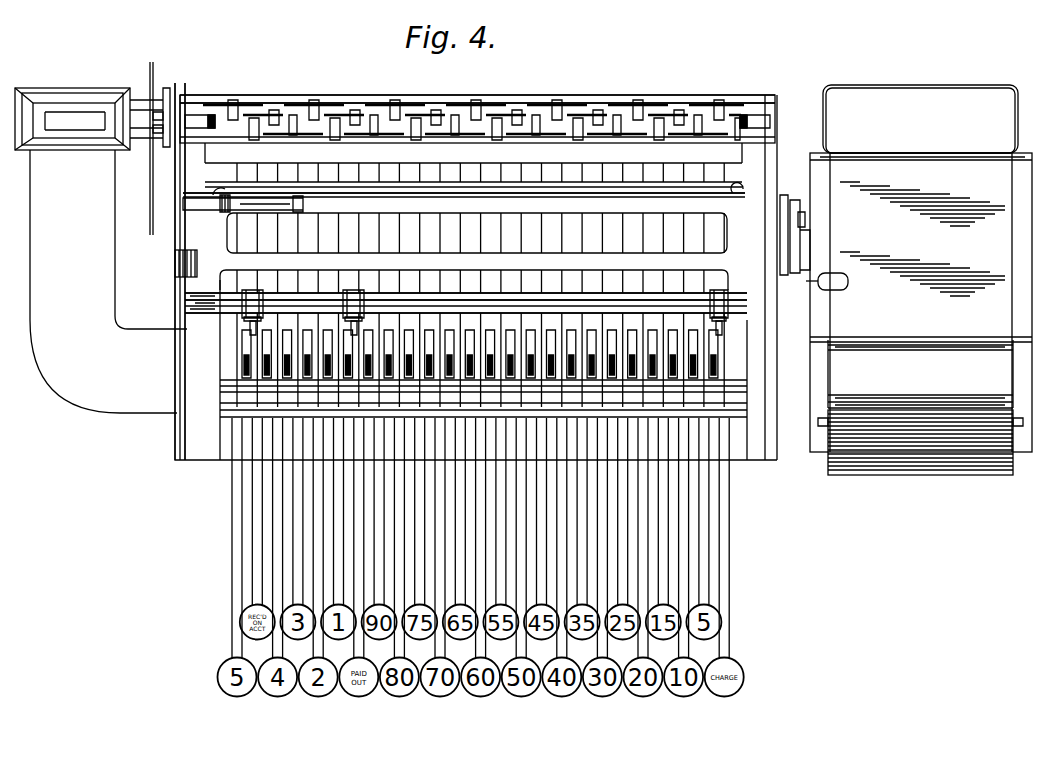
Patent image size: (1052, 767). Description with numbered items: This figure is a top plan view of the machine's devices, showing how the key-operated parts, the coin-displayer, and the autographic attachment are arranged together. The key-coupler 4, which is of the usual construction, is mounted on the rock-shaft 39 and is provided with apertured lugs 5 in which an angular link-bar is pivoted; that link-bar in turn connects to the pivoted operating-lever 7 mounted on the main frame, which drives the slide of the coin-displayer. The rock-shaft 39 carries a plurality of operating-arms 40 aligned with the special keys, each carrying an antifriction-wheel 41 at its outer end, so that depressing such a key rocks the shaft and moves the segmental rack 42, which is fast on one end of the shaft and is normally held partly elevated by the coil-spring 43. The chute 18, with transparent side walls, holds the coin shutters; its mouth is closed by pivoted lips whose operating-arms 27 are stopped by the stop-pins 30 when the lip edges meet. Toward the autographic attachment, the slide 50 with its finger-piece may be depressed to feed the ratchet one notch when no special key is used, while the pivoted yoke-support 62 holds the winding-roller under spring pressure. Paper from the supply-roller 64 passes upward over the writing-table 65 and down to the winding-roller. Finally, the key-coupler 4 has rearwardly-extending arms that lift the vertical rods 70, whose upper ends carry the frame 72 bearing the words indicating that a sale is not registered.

The key-coupler 4 is at (196, 263).
The apertured lugs 5 is at (227, 213).
The operating-lever 7 is at (173, 215).
The chute 18 is at (27, 150).
The operating-arms 27 is at (165, 98).
The stop-pins 30 is at (152, 100).
The rock-shaft 39 is at (218, 322).
The operating-arms 40 is at (355, 300).
The antifriction-wheels 41 is at (252, 335).
The segmental rack 42 is at (790, 252).
The coil-spring 43 is at (780, 215).
The slide 50 is at (848, 282).
The yoke-support 62 is at (920, 119).
The supply-roller 64 is at (823, 442).
The writing-table 65 is at (812, 338).
The vertical rods 70 is at (197, 115).
The frame 72 is at (258, 97).